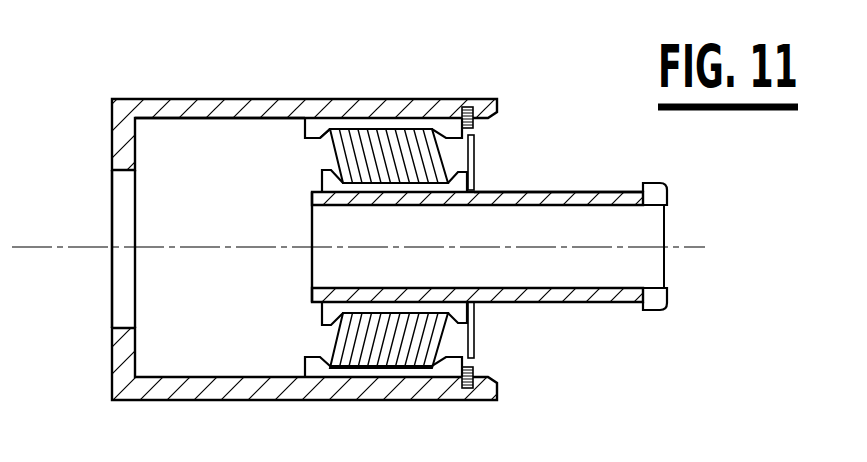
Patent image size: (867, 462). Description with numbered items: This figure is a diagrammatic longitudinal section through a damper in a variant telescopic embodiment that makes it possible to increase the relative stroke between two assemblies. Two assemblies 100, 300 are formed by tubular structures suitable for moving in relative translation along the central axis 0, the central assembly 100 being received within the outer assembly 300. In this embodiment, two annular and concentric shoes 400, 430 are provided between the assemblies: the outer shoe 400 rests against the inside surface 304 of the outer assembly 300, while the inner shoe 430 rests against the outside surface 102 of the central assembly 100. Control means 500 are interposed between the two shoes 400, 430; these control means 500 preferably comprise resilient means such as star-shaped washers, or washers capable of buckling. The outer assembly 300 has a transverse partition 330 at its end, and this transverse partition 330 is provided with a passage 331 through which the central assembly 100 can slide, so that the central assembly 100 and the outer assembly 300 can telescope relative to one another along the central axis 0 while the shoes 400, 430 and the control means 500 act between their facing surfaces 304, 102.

The central axis 0 is at (58, 247).
The assembly 100 is at (618, 303).
The outside surface 102 is at (507, 186).
The assembly 300 is at (323, 103).
The inside surface 304 is at (205, 126).
The transverse partition 330 is at (113, 157).
The passage 331 is at (125, 296).
The shoe 400 is at (381, 126).
The shoe 430 is at (471, 311).
The control means 500 is at (322, 153).